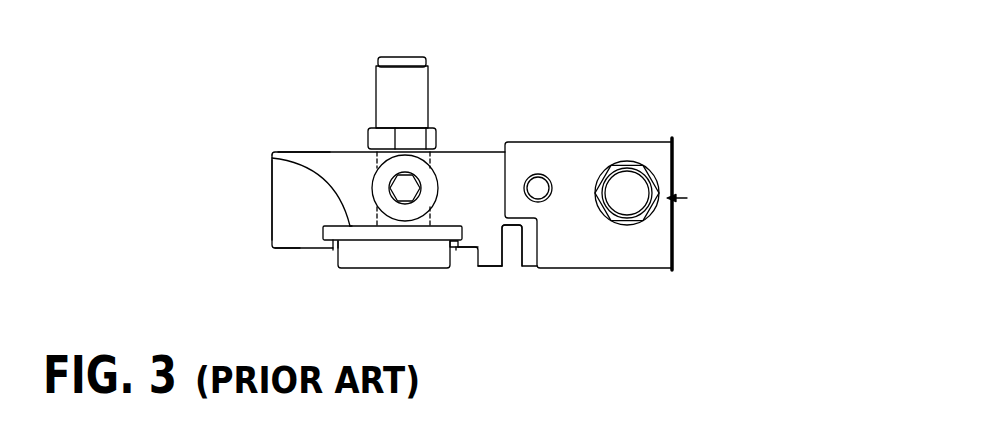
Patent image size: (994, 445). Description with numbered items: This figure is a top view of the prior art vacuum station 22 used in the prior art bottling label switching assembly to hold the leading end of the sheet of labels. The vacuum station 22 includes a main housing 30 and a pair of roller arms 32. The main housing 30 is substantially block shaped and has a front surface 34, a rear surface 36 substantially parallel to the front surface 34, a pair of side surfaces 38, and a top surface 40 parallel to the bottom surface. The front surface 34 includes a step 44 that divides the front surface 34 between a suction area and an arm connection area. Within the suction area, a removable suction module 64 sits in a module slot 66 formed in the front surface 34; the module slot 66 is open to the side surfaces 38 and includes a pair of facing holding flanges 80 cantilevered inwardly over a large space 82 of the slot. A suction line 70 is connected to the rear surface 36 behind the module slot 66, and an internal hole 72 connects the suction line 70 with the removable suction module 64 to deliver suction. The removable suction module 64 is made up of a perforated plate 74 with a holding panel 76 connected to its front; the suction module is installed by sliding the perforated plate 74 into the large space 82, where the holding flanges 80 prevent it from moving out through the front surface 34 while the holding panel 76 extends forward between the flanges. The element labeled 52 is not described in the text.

The vacuum station 22 is at (651, 69).
The main housing 30 is at (279, 253).
The roller arms 32 is at (626, 247).
The front surface 34 is at (491, 270).
The rear surface 36 is at (484, 148).
The side surfaces 38 is at (285, 193).
The top surface 40 is at (272, 198).
The step 44 is at (470, 249).
The tab 52 is at (508, 253).
The removable suction module 64 is at (320, 232).
The module slot 66 is at (272, 158).
The suction line 70 is at (432, 51).
The internal hole 72 is at (441, 246).
The perforated plate 74 is at (338, 250).
The holding panel 76 is at (375, 257).
The holding flanges 80 is at (333, 250).
The large space 82 is at (352, 226).